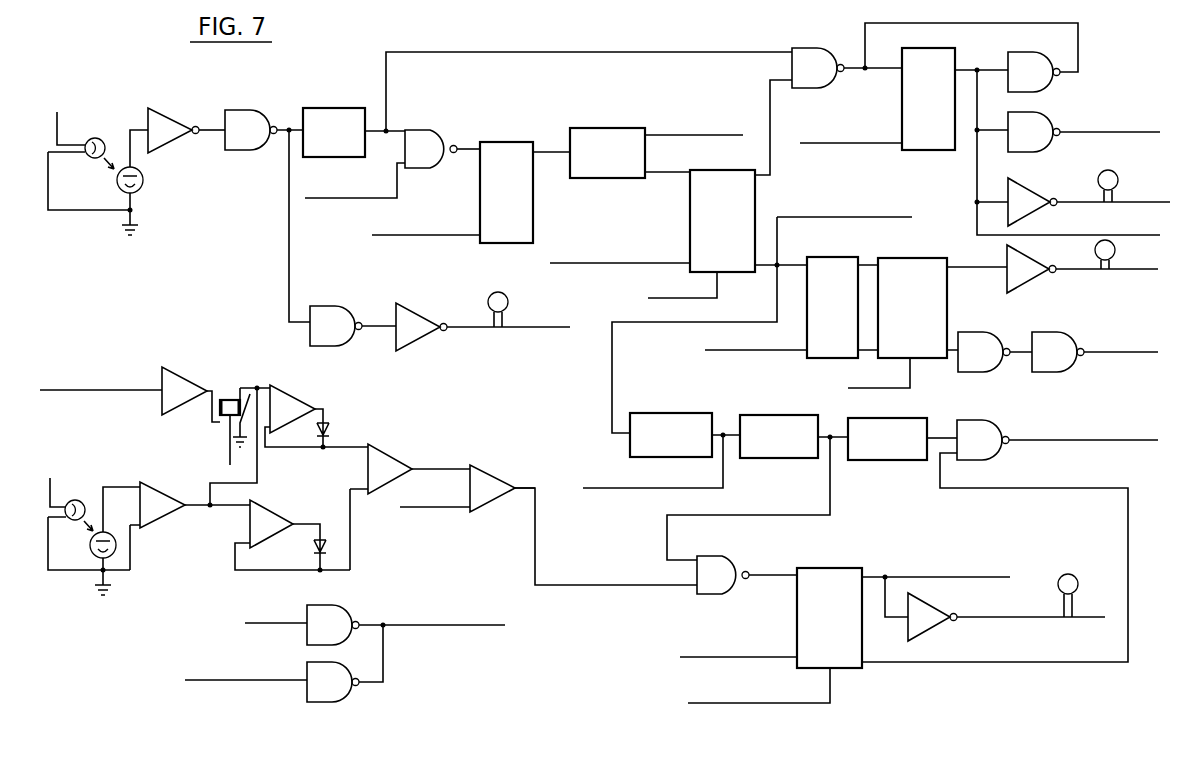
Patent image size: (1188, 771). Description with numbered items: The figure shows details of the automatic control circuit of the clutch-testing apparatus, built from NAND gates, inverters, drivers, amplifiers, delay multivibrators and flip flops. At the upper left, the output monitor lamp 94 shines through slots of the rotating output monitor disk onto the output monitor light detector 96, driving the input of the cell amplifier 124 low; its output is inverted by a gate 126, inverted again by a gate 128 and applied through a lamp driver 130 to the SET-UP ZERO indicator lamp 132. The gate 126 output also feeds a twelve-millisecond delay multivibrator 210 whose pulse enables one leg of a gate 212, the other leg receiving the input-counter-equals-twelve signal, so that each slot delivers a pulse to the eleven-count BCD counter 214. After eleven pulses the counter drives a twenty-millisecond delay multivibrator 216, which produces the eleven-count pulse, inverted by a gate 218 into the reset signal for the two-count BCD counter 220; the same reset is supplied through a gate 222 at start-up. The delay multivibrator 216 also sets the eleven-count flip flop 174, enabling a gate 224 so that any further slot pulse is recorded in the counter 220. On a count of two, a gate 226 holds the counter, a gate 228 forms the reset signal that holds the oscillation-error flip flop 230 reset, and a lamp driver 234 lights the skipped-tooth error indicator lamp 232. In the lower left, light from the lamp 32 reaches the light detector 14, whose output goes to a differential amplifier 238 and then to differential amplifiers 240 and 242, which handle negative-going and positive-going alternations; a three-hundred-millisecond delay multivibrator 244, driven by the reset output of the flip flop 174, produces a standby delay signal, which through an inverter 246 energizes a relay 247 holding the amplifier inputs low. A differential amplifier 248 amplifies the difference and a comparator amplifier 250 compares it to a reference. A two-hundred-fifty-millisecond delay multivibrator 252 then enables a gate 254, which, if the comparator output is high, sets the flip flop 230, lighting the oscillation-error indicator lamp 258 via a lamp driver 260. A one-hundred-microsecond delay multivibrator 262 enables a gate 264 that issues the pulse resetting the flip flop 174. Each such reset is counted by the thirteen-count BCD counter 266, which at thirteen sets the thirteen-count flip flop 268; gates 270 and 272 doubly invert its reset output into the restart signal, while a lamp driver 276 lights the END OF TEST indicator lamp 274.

The light detector 14 is at (90, 547).
The lamp 32 is at (77, 499).
The output monitor lamp 94 is at (98, 138).
The output monitor light detector 96 is at (145, 182).
The cell amplifier 124 is at (181, 118).
The gate 126 is at (258, 118).
The gate 128 is at (358, 302).
The lamp driver 130 is at (422, 309).
The SET-UP ZERO indicator lamp 132 is at (510, 302).
The 11-COUNT flip flop 174 is at (690, 205).
The 12-millisecond DMV 210 is at (330, 100).
The gate 212 is at (443, 130).
The BCD 11-counter 214 is at (533, 208).
The 20-millisecond DMV 216 is at (610, 128).
The gate 218 is at (355, 699).
The BCD 2-counter 220 is at (905, 150).
The gate 222 is at (345, 606).
The gate 224 is at (830, 88).
The gate 226 is at (1062, 88).
The gate 228 is at (1060, 141).
The OSC.ERROR flip flop 230 is at (860, 668).
The S.T. ERROR indicator lamp 232 is at (1114, 174).
The lamp driver 234 is at (1024, 187).
The differential amplifier 238 is at (162, 521).
The differential amplifier 240 is at (292, 386).
The differential amplifier 242 is at (275, 500).
The 300-millisecond DMV 244 is at (688, 413).
The inverter 246 is at (190, 381).
The relay 247 is at (228, 400).
The differential amplifier 248 is at (382, 451).
The comparator amplifier 250 is at (490, 470).
The 250-millisecond DMV 252 is at (788, 415).
The gate 254 is at (725, 558).
The OSC.ERROR indicator lamp 258 is at (1078, 578).
The lamp driver 260 is at (945, 612).
The 100-microsecond DMV 262 is at (913, 418).
The gate 264 is at (985, 421).
The BCD 13-counter 266 is at (828, 358).
The 13-COUNT flip flop 268 is at (947, 300).
The gate 270 is at (994, 334).
The gate 272 is at (1072, 334).
The END OF TEST indicator lamp 274 is at (1115, 250).
The lamp driver 276 is at (1040, 280).